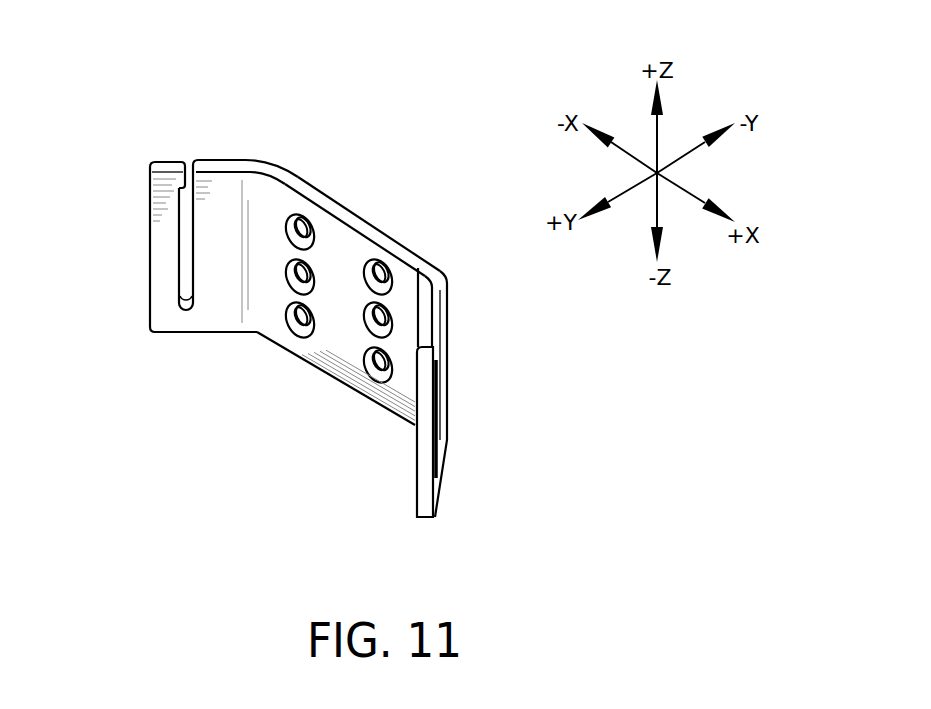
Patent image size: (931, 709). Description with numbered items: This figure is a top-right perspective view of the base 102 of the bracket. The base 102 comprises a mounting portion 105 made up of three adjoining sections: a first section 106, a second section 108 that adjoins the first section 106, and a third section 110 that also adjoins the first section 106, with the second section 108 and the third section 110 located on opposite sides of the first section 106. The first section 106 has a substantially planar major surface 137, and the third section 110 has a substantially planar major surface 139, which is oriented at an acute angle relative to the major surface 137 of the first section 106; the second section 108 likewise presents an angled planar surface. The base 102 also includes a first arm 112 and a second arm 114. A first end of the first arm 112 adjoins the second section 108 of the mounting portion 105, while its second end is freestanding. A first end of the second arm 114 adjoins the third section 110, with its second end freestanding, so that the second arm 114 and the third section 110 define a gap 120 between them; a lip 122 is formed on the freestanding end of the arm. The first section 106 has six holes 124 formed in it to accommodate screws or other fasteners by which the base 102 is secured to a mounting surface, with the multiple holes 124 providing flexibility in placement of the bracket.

The base 102 is at (168, 120).
The mounting portion 105 is at (318, 174).
The first section 106 is at (342, 247).
The second section 108 is at (427, 338).
The third section 110 is at (229, 144).
The first arm 112 is at (423, 534).
The second arm 114 is at (137, 259).
The gap 120 is at (187, 287).
The lip 122 is at (167, 185).
The holes 124 is at (393, 368).
The major surface 137 is at (337, 353).
The major surface 139 is at (215, 307).